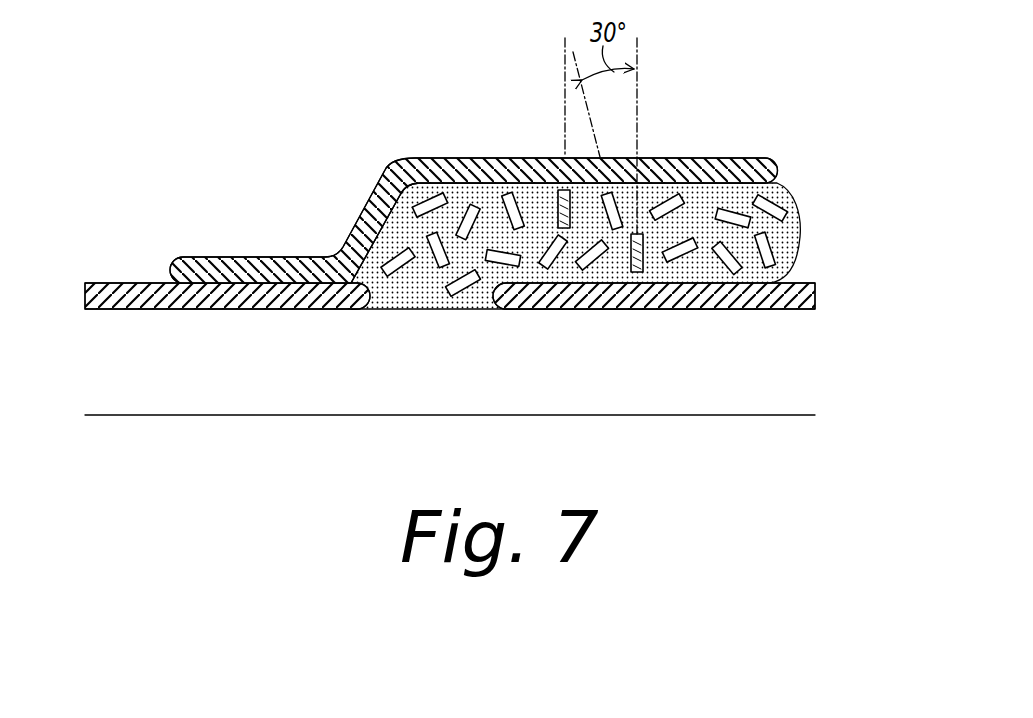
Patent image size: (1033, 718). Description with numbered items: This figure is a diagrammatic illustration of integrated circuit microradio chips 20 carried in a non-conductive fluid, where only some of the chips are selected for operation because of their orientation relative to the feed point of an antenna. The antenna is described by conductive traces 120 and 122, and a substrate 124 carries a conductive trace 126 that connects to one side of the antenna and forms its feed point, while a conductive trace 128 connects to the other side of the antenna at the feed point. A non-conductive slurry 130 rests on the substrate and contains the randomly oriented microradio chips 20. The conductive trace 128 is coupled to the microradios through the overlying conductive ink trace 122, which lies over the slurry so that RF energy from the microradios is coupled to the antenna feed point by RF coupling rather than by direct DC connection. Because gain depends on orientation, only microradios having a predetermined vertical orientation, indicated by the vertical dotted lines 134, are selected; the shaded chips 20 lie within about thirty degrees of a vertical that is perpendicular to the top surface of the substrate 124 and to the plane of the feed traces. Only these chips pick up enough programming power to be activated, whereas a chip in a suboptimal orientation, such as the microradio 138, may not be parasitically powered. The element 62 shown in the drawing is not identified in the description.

The microradio chips 20 is at (546, 203).
The element 62 is at (634, 262).
The conductive trace 120 is at (106, 262).
The conductive ink trace 122 is at (266, 270).
The substrate 124 is at (282, 360).
The conductive trace 126 is at (633, 310).
The conductive trace 128 is at (230, 310).
The non-conductive slurry 130 is at (397, 292).
The vertical dotted lines 134 is at (562, 68).
The microradio 138 is at (490, 262).